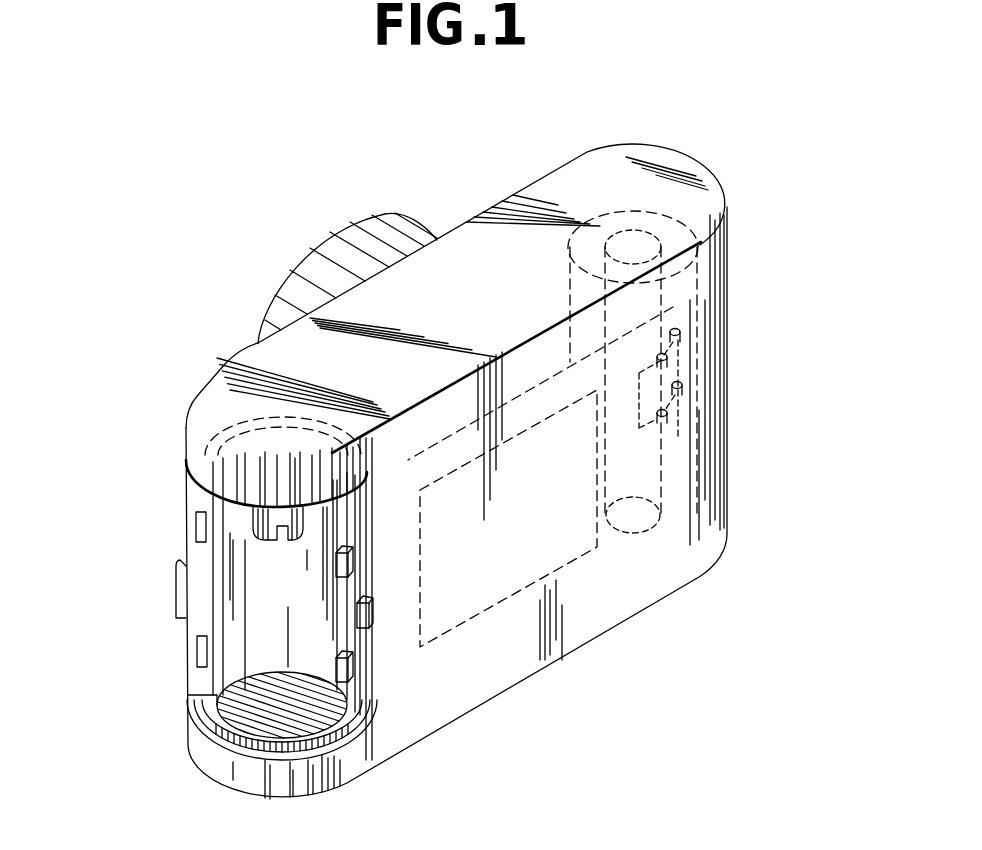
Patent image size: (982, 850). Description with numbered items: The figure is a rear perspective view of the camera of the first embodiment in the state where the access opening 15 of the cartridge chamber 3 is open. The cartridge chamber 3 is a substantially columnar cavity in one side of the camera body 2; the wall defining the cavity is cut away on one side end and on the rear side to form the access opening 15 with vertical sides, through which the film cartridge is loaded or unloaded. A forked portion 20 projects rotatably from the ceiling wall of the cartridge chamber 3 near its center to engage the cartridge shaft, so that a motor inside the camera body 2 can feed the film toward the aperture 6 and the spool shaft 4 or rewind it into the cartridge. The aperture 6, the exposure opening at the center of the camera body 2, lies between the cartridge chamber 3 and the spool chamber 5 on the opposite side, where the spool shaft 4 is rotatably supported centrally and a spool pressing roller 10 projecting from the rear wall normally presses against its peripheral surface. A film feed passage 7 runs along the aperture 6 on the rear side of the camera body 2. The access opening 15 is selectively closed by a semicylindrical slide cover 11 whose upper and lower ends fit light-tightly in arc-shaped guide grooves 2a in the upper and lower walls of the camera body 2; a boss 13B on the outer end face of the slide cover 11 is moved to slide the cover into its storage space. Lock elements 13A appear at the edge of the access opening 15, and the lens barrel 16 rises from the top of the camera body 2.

The camera body 2 is at (462, 238).
The arc-shaped guide grooves 2a is at (205, 742).
The cartridge chamber 3 is at (200, 698).
The spool shaft 4 is at (643, 247).
The spool chamber 5 is at (672, 242).
The aperture 6 is at (550, 548).
The film feed passage 7 is at (627, 560).
The spool pressing roller 10 is at (646, 421).
The slide cover 11 is at (363, 717).
The engaging claw 13A is at (178, 592).
The boss 13B is at (368, 618).
The access opening 15 is at (235, 602).
The lens barrel 16 is at (303, 270).
The forked portion 20 is at (262, 519).